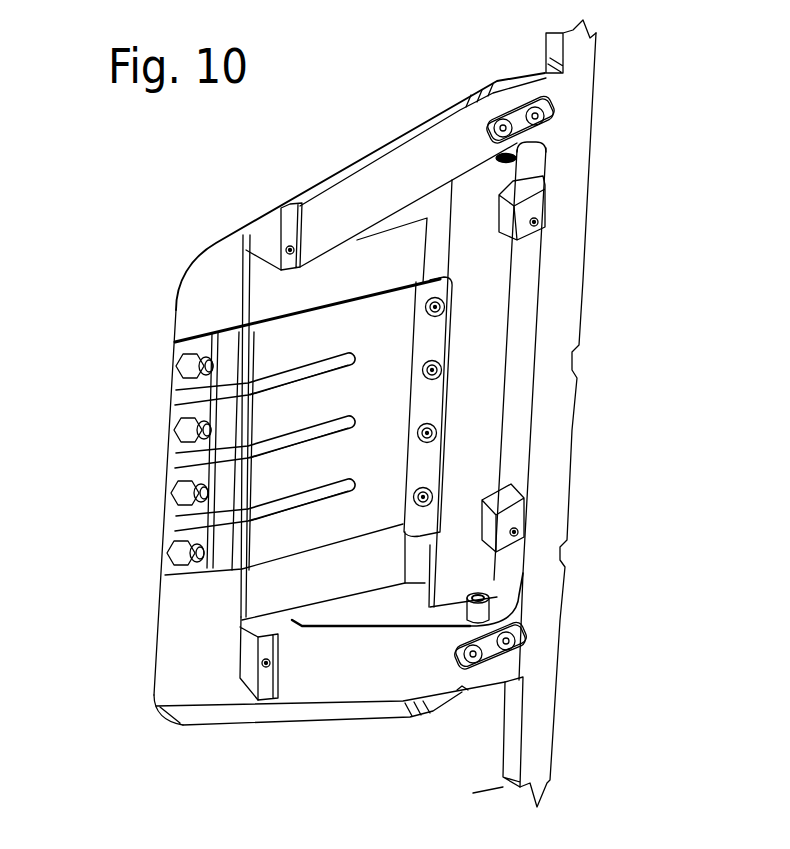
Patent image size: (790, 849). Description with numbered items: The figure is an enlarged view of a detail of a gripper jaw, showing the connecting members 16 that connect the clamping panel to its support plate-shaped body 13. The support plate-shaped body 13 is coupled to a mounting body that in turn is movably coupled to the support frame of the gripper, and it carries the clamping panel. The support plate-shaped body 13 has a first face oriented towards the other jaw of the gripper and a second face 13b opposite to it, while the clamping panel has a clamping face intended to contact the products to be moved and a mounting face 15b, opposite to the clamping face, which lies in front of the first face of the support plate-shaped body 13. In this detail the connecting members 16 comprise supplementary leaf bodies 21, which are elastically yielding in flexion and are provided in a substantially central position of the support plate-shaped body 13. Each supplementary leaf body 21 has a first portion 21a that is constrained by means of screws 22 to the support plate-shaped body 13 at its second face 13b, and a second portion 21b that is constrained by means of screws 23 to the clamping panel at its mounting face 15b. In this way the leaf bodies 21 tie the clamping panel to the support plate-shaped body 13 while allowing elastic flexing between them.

The support plate-shaped body 13 is at (343, 708).
The second face 13b is at (538, 663).
The mounting face 15b is at (181, 676).
The connecting members 16 is at (165, 607).
The supplementary leaf bodies 21 is at (352, 286).
The first portion 21a is at (427, 398).
The second portion 21b is at (160, 591).
The screws 22 is at (443, 314).
The screws 23 is at (183, 496).